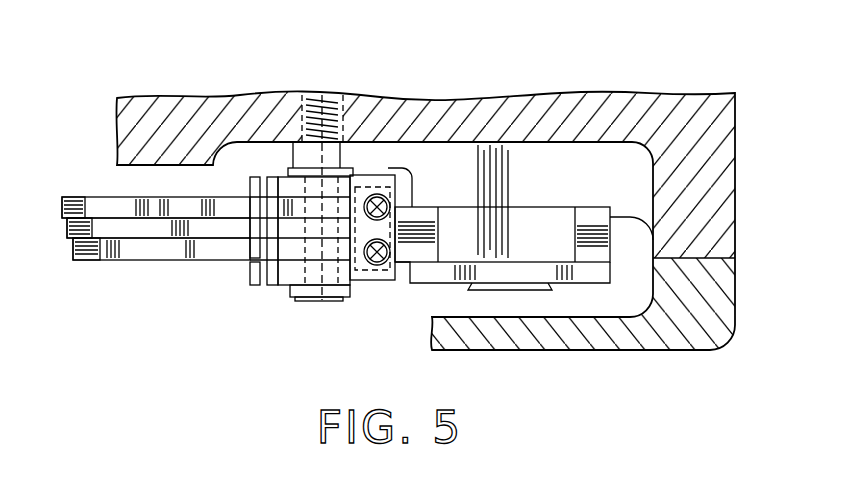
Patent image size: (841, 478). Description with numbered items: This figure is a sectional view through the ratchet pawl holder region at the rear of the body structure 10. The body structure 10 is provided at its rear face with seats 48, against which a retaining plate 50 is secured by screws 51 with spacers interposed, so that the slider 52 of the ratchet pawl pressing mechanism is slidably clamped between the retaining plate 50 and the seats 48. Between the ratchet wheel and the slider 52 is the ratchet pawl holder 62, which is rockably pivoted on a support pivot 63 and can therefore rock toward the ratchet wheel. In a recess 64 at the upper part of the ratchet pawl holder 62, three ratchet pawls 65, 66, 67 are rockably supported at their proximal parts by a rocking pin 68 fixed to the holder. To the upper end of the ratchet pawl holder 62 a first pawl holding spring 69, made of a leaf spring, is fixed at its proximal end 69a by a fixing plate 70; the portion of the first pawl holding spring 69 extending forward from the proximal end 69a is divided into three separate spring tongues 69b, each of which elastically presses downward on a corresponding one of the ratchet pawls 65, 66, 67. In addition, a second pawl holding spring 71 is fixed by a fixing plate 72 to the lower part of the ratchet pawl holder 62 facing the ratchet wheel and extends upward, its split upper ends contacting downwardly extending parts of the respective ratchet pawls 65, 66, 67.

The body structure 10 is at (728, 226).
The seats 48 is at (542, 216).
The retaining plate 50 is at (580, 275).
The screws 51 is at (505, 292).
The slider 52 is at (575, 236).
The ratchet pawl holder 62 is at (269, 292).
The support pivot 63 is at (310, 110).
The recess 64 is at (350, 248).
The ratchet pawl 65 is at (110, 196).
The ratchet pawl 66 is at (117, 239).
The ratchet pawl 67 is at (152, 260).
The rocking pin 68 is at (306, 302).
The first pawl holding spring 69 is at (205, 266).
The proximal end 69a is at (386, 186).
The spring tongues 69b is at (187, 226).
The fixing plate 70 is at (372, 174).
The second pawl holding spring 71 is at (262, 176).
The fixing plate 72 is at (250, 178).